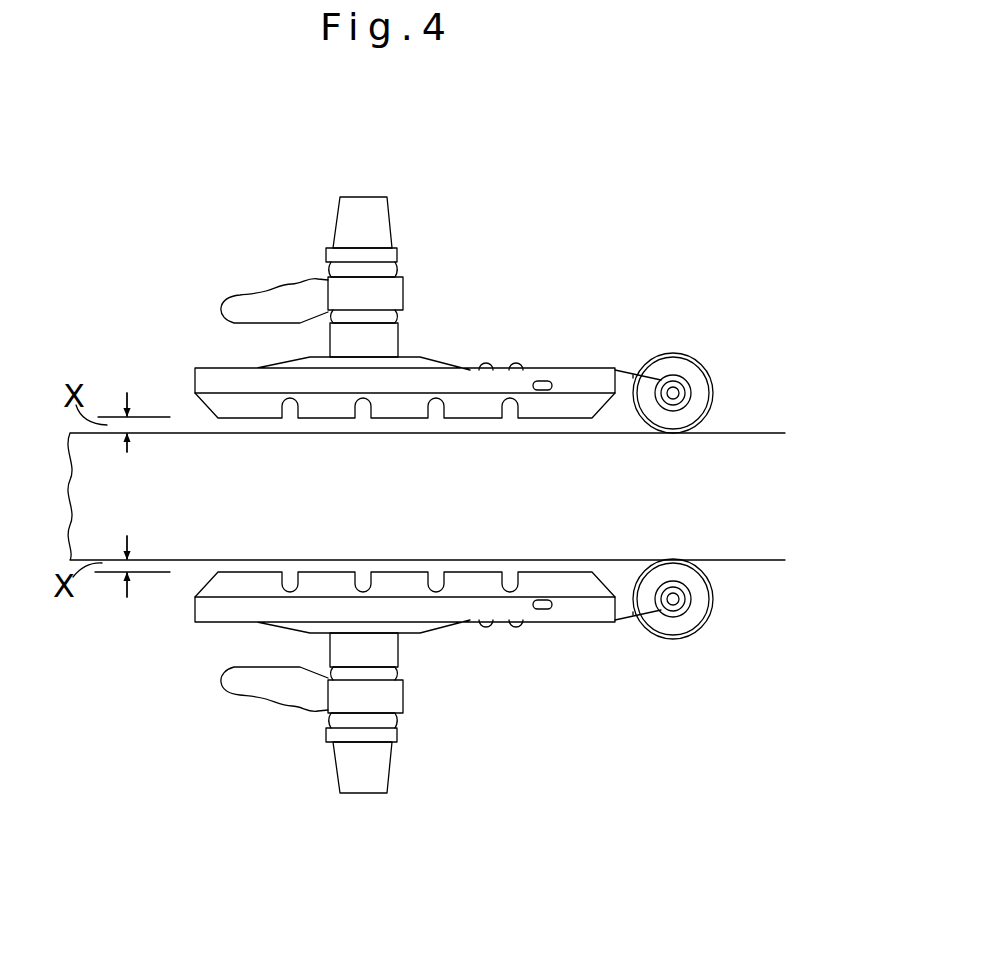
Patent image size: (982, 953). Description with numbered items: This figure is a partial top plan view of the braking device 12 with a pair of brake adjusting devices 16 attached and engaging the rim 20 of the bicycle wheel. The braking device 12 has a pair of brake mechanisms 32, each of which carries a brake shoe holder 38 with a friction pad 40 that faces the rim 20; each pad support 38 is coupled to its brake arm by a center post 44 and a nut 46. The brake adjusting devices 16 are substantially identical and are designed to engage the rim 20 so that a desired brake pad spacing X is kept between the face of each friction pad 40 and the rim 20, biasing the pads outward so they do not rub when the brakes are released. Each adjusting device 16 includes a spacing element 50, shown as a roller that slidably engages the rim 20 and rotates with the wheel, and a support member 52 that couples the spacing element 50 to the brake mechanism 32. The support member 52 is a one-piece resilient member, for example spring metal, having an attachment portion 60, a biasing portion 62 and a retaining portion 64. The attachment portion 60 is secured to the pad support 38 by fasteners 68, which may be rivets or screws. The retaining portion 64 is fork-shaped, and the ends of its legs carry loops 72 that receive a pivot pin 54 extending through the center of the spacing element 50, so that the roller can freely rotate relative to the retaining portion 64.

The braking device 12 is at (689, 221).
The brake adjusting device 16 is at (698, 347).
The rim 20 is at (759, 429).
The brake mechanism 32 is at (430, 284).
The brake shoe holder 38 is at (232, 365).
The friction pad 40 is at (199, 407).
The center post 44 is at (328, 337).
The nut 46 is at (393, 221).
The spacing element 50 is at (711, 391).
The support member 52 is at (629, 374).
The pivot pin 54 is at (669, 387).
The attachment portion 60 is at (532, 370).
The biasing portion 62 is at (645, 376).
The retaining portion 64 is at (689, 383).
The fastener 68 is at (513, 363).
The loop 72 is at (671, 411).